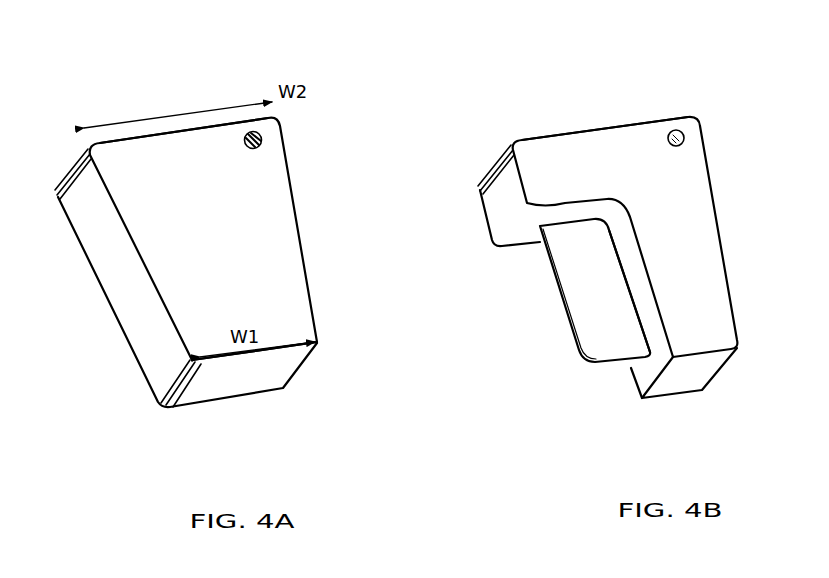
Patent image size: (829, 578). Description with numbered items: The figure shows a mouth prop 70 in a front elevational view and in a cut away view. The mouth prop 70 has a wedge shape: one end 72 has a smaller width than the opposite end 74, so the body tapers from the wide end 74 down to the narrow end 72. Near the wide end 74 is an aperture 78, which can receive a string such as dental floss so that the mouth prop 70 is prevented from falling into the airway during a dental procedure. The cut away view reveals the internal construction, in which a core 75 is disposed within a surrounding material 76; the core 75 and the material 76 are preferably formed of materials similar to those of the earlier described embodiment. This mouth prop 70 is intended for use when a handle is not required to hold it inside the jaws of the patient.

In FIG. 4A, the mouth prop 70 is at (103, 55).
In FIG. 4B, the mouth prop 70 is at (470, 52).
In FIG. 4A, the end 72 is at (245, 387).
In FIG. 4B, the end 72 is at (692, 372).
In FIG. 4A, the end 74 is at (195, 133).
In FIG. 4B, the end 74 is at (608, 132).
In FIG. 4B, the core 75 is at (587, 258).
In FIG. 4B, the material 76 is at (643, 300).
In FIG. 4B, the aperture 78 is at (680, 128).